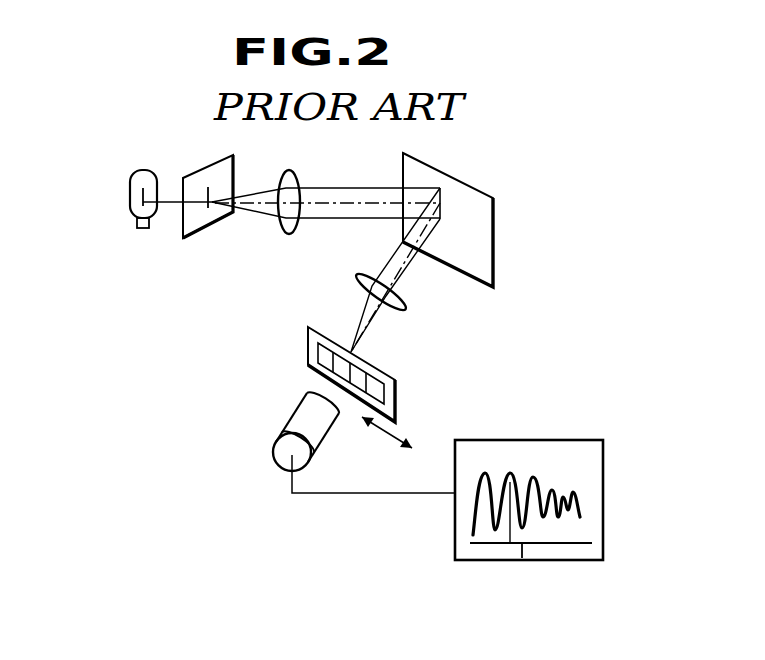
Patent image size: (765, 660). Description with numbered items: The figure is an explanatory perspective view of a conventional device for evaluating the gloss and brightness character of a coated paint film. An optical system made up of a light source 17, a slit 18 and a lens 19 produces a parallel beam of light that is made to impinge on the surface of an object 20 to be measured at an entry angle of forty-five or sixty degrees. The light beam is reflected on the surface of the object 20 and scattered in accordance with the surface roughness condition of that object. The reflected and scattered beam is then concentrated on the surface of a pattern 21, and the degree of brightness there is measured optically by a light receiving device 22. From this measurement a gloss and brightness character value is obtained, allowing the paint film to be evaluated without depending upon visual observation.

The light source 17 is at (132, 201).
The slit 18 is at (205, 212).
The lens 19 is at (297, 226).
The object 20 is at (488, 218).
The pattern 21 is at (397, 395).
The light receiving device 22 is at (308, 412).